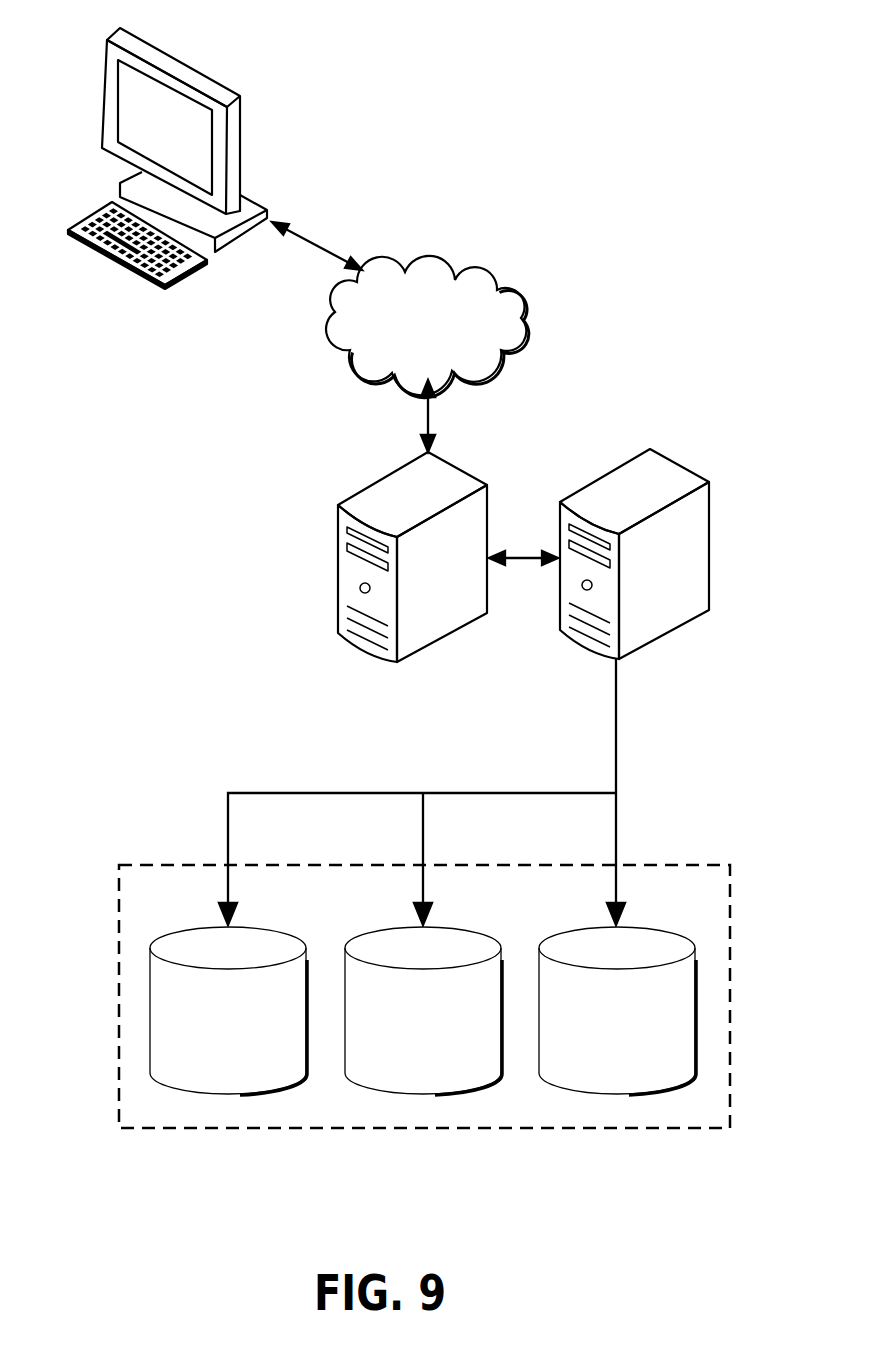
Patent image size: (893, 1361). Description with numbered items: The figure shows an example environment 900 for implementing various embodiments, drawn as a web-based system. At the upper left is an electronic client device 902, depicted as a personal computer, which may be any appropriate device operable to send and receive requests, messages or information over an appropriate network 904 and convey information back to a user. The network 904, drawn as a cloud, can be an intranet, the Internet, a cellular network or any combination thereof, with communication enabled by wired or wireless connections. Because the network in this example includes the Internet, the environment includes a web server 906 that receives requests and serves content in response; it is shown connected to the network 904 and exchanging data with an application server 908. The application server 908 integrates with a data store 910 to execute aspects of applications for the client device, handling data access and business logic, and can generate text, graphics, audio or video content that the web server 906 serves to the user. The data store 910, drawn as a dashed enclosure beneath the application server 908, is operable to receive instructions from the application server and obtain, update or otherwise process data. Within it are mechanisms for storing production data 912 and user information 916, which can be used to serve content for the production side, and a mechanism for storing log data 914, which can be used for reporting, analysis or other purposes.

The environment 900 is at (671, 305).
The electronic client device 902 is at (188, 65).
The network 904 is at (463, 270).
The web server 906 is at (338, 548).
The application server 908 is at (588, 652).
The data store 910 is at (157, 1129).
The production data 912 is at (227, 1093).
The log data 914 is at (423, 1092).
The user information 916 is at (616, 1092).